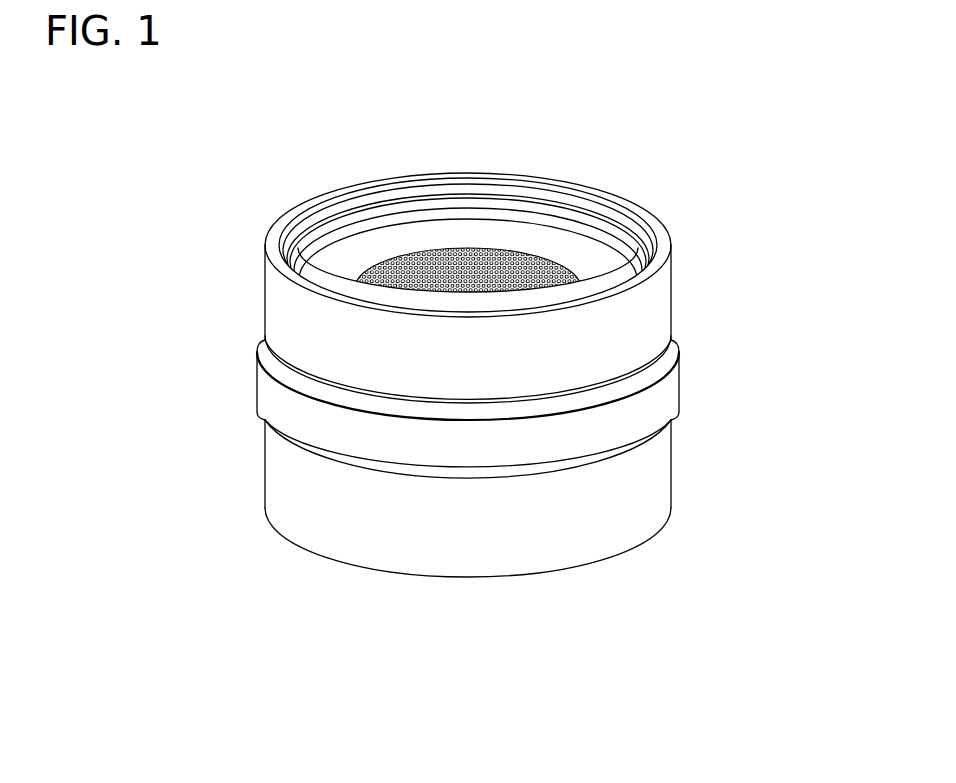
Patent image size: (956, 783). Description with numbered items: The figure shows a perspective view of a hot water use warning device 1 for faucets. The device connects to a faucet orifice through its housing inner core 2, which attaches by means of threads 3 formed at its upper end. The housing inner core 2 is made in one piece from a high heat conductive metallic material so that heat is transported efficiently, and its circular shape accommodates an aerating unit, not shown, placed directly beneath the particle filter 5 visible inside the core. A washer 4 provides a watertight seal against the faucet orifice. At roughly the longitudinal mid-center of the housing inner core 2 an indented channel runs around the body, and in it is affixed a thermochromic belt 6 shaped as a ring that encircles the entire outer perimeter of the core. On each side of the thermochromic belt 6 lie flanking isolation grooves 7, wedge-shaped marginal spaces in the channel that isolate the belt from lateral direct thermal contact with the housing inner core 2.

The hot water use warning device 1 is at (488, 338).
The housing inner core 2 is at (265, 297).
The threads 3 is at (483, 202).
The washer 4 is at (402, 238).
The particle filter 5 is at (537, 262).
The thermochromic belt 6 is at (449, 392).
The isolation grooves 7 is at (660, 363).